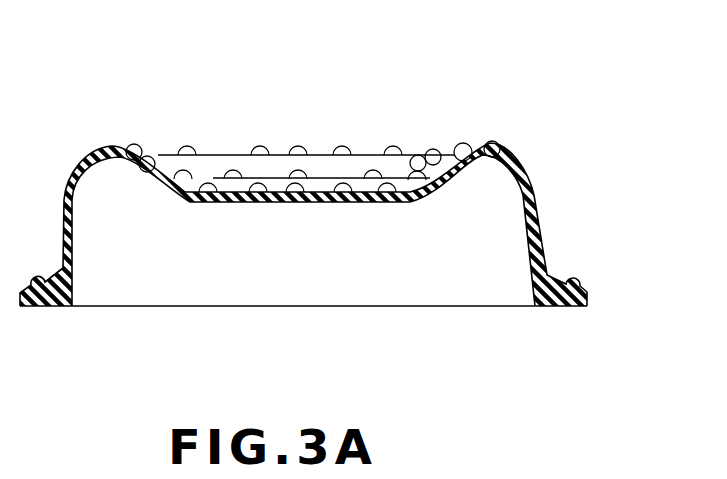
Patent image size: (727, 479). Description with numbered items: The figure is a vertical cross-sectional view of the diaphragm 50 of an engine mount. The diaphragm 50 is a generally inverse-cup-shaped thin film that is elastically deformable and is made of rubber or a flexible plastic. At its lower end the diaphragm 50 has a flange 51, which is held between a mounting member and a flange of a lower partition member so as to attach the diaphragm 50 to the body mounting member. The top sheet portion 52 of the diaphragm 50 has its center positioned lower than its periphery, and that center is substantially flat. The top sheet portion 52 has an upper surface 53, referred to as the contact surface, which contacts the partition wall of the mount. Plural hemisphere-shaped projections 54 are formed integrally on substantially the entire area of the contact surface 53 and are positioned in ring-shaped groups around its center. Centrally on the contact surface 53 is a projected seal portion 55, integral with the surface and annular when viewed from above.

The diaphragm 50 is at (649, 170).
The flange 51 is at (572, 306).
The top sheet portion 52 is at (323, 203).
The upper surface 53 is at (281, 190).
The hemisphere-shaped projections 54 is at (440, 160).
The projected seal portion 55 is at (212, 180).